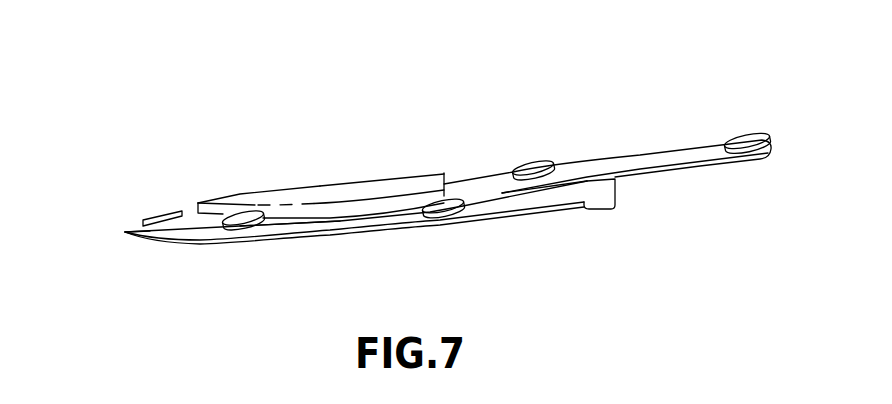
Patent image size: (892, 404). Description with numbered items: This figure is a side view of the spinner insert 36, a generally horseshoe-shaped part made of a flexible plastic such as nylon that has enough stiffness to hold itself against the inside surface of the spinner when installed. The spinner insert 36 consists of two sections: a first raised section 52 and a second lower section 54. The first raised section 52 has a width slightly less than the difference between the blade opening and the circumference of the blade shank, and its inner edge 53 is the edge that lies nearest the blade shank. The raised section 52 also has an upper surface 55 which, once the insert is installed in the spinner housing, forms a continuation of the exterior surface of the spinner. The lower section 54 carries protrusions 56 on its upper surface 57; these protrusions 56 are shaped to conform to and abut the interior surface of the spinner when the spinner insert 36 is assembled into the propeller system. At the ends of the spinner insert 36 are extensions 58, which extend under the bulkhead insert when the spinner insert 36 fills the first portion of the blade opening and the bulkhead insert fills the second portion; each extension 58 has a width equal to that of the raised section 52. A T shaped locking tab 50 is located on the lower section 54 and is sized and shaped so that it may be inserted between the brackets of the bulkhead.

The spinner insert 36 is at (252, 98).
The T shaped locking tab 50 is at (547, 200).
The first raised section 52 is at (318, 190).
The inner edge 53 is at (283, 185).
The second lower section 54 is at (125, 232).
The upper surface 55 is at (384, 188).
The protrusions 56 is at (242, 217).
The upper surface 57 is at (338, 226).
The extensions 58 is at (625, 157).